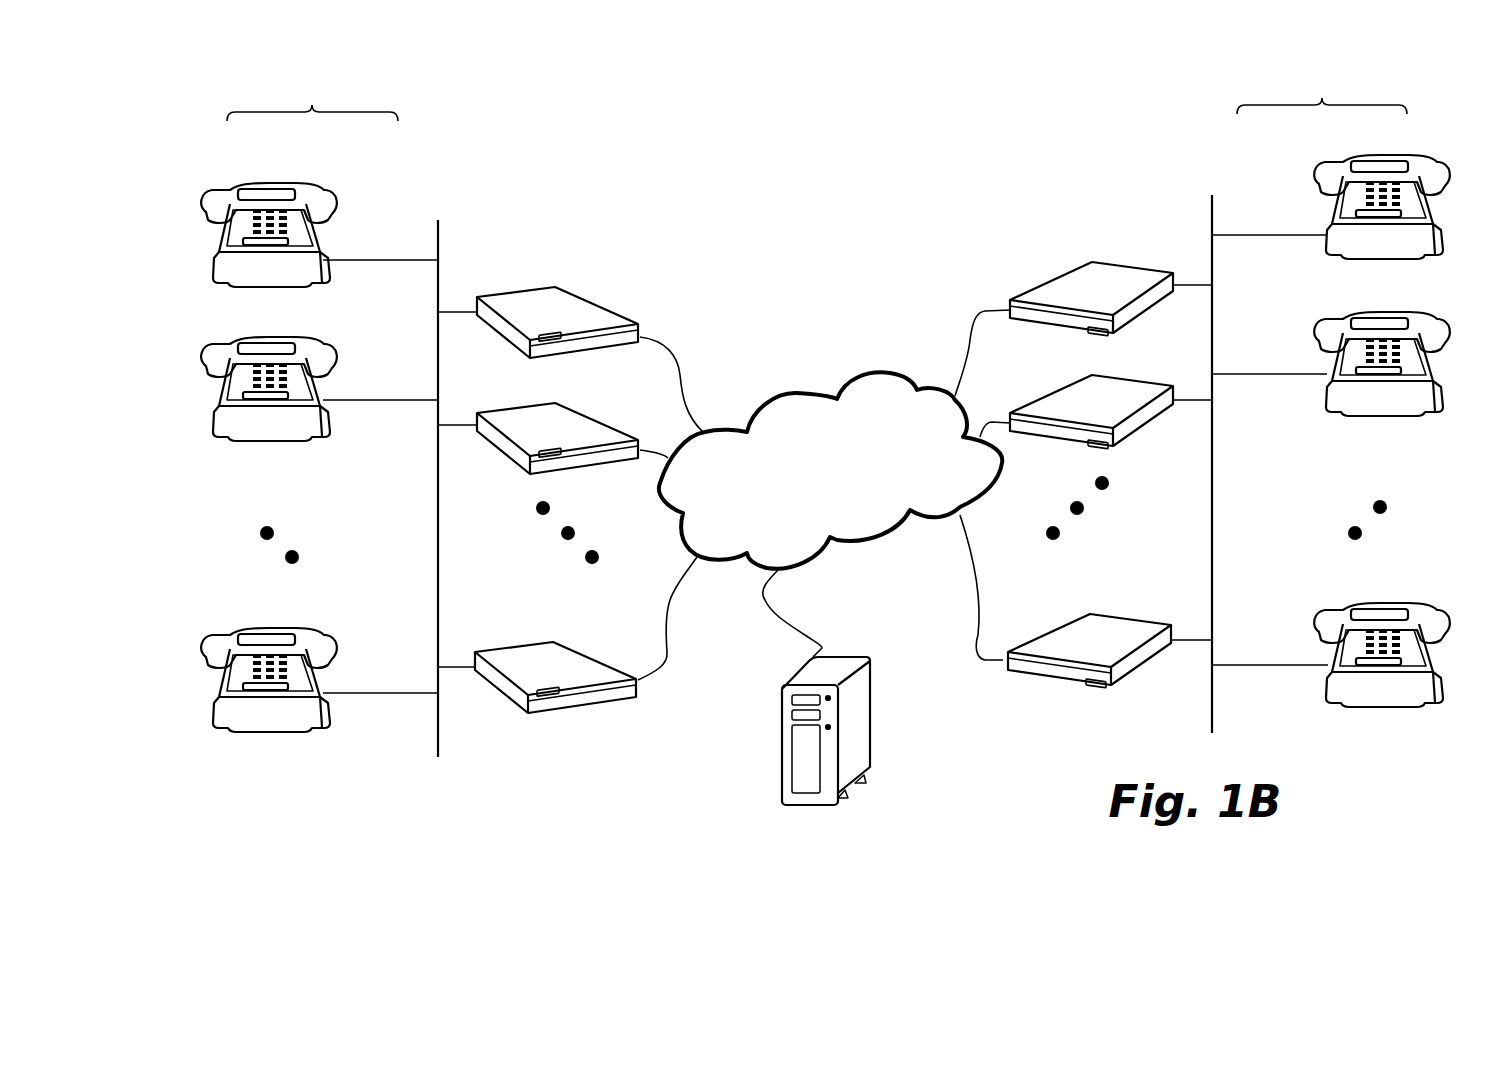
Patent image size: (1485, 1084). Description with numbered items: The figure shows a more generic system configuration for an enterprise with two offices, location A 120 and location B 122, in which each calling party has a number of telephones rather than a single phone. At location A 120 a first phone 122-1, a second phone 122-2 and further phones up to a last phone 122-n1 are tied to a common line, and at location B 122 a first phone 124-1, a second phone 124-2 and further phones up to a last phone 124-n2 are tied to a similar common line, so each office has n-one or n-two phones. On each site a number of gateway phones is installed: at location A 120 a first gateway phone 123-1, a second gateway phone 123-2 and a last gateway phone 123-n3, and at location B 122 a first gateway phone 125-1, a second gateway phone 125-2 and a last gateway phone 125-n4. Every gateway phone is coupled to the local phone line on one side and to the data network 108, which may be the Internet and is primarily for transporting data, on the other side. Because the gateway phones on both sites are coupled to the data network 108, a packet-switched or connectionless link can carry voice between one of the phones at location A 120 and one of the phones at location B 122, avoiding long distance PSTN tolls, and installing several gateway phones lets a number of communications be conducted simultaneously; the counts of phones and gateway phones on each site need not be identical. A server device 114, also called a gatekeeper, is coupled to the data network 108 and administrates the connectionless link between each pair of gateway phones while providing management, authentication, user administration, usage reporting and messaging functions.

The data network 108 is at (793, 403).
The server device 114 is at (850, 723).
The location A 120 is at (312, 96).
The location B 122 is at (1322, 89).
The phone 122-1 is at (325, 183).
The phone 122-2 is at (323, 338).
The phone 122-n1 is at (333, 643).
The gateway phone 123-1 is at (563, 300).
The gateway phone 123-2 is at (575, 425).
The gateway phone 123-n3 is at (562, 668).
The phone 124-1 is at (1300, 183).
The phone 124-2 is at (1300, 338).
The phone 124-n2 is at (1300, 632).
The gateway phone 125-1 is at (1070, 272).
The gateway phone 125-2 is at (1058, 412).
The gateway phone 125-n4 is at (1057, 640).